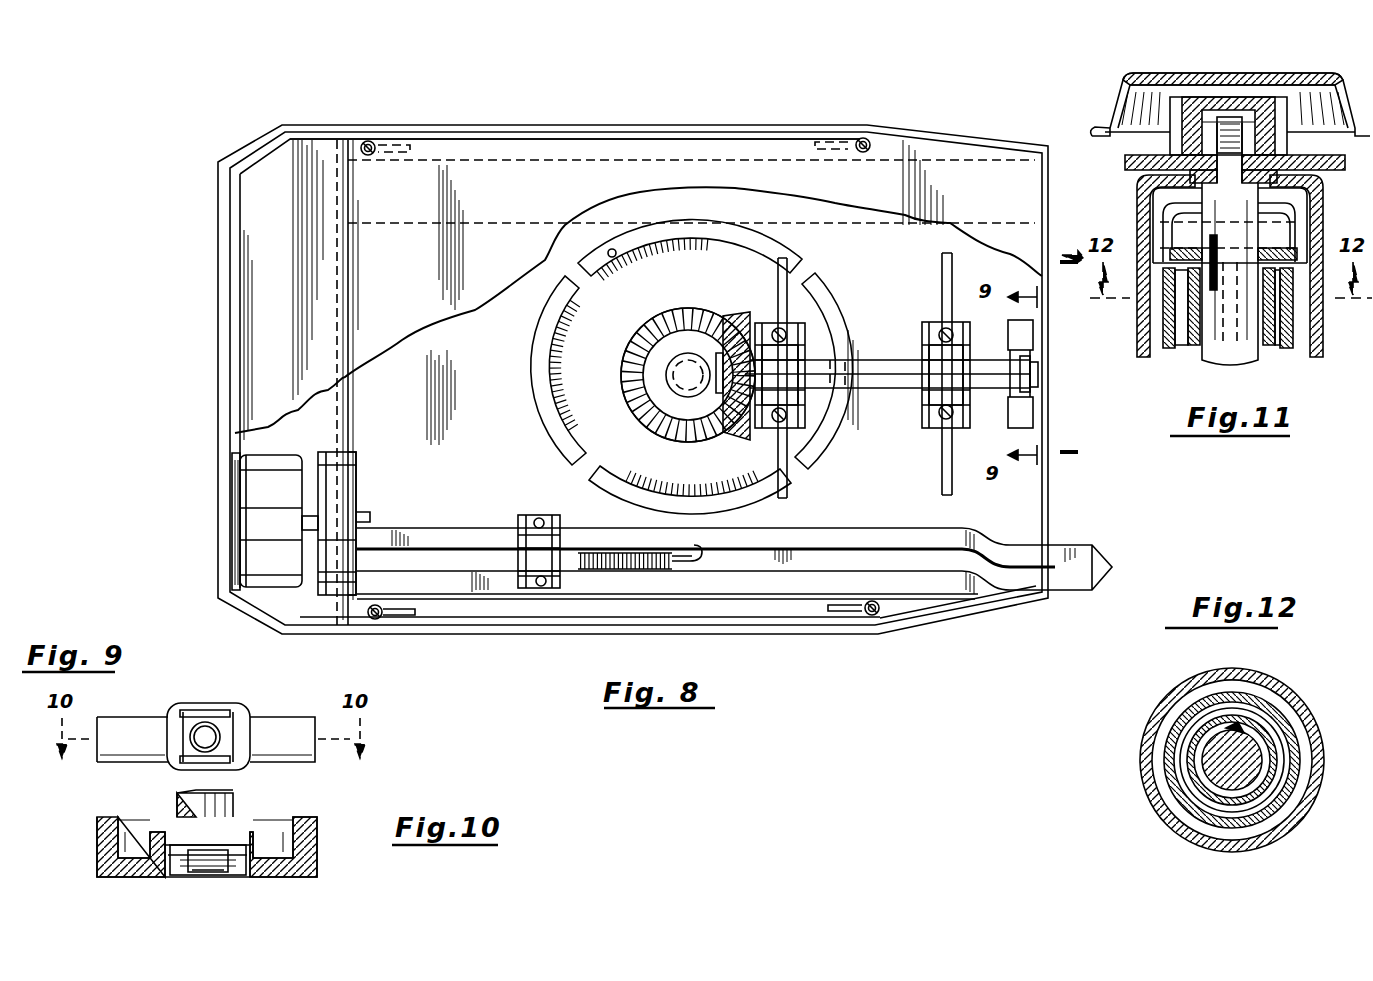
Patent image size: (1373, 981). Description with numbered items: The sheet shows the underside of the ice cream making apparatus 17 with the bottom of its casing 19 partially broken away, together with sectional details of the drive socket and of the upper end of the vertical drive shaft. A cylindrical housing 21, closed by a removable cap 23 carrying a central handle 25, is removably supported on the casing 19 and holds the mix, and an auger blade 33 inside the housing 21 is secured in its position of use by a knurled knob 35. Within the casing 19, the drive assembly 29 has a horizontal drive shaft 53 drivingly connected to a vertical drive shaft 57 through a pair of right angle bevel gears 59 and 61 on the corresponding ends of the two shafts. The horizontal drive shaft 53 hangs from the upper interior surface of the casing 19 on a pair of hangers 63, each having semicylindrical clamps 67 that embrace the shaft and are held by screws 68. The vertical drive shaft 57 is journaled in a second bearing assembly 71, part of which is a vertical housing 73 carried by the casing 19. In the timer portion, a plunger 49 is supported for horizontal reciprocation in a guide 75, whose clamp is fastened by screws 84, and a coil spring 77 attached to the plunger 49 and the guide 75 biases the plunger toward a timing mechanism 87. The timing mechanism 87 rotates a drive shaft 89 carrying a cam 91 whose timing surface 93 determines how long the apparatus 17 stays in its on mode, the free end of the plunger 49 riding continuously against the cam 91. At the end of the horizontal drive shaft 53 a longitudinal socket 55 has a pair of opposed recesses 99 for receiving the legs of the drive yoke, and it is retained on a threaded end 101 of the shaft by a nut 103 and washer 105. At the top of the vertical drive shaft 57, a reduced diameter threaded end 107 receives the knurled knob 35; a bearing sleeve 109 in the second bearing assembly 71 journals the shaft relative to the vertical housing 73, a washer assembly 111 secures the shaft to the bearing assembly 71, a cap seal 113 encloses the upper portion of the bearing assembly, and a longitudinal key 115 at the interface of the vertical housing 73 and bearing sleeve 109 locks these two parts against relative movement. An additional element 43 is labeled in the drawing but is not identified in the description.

In FIG. 8, the apparatus 17 is at (562, 109).
In FIG. 8, the casing 19 is at (657, 126).
In FIG. 11, the cylindrical housing 21 is at (1328, 340).
In FIG. 12, the cylindrical housing 21 is at (1170, 705).
In FIG. 11, the removable cap 23 is at (1100, 120).
In FIG. 11, the central handle 25 is at (1205, 73).
In FIG. 8, the drive assembly 29 is at (651, 437).
In FIG. 11, the auger blade 33 is at (1114, 166).
In FIG. 11, the knurled knob 35 is at (1280, 97).
In FIG. 8, the ring segments 43 is at (576, 303).
In FIG. 8, the plunger 49 is at (436, 529).
In FIG. 8, the horizontal drive shaft 53 is at (868, 388).
In FIG. 10, the horizontal drive shaft 53 is at (236, 810).
In FIG. 8, the socket 55 is at (1006, 333).
In FIG. 9, the socket 55 is at (262, 702).
In FIG. 10, the socket 55 is at (330, 857).
In FIG. 8, the vertical drive shaft 57 is at (680, 370).
In FIG. 11, the vertical drive shaft 57 is at (1230, 360).
In FIG. 12, the vertical drive shaft 57 is at (1210, 762).
In FIG. 8, the bevel gear 59 is at (735, 310).
In FIG. 8, the bevel gear 61 is at (625, 362).
In FIG. 8, the hanger 63 is at (918, 322).
In FIG. 8, the semicylindrical-shaped clamp 67 is at (925, 340).
In FIG. 8, the screw 68 is at (776, 330).
In FIG. 11, the second bearing assembly 71 is at (1190, 350).
In FIG. 11, the vertical housing 73 is at (1285, 308).
In FIG. 12, the vertical housing 73 is at (1262, 722).
In FIG. 8, the guide 75 is at (536, 503).
In FIG. 8, the coil spring 77 is at (612, 572).
In FIG. 8, the screw 84 is at (542, 518).
In FIG. 8, the timing mechanism 87 is at (262, 460).
In FIG. 8, the drive shaft 89 is at (303, 520).
In FIG. 8, the cam 91 is at (367, 469).
In FIG. 8, the timing surface 93 is at (358, 492).
In FIG. 10, the recess 99 is at (120, 825).
In FIG. 8, the threaded end 101 is at (1033, 362).
In FIG. 9, the threaded end 101 is at (195, 730).
In FIG. 10, the threaded end 101 is at (205, 878).
In FIG. 8, the nut 103 is at (1038, 375).
In FIG. 9, the nut 103 is at (212, 708).
In FIG. 10, the nut 103 is at (180, 873).
In FIG. 10, the washer 105 is at (240, 872).
In FIG. 11, the reduced diameter threaded end 107 is at (1245, 128).
In FIG. 11, the bearing sleeve 109 is at (1280, 348).
In FIG. 12, the bearing sleeve 109 is at (1300, 748).
In FIG. 11, the washer assembly 111 is at (1168, 235).
In FIG. 11, the cap seal 113 is at (1305, 210).
In FIG. 11, the longitudinal key 115 is at (1225, 285).
In FIG. 12, the longitudinal key 115 is at (1234, 725).